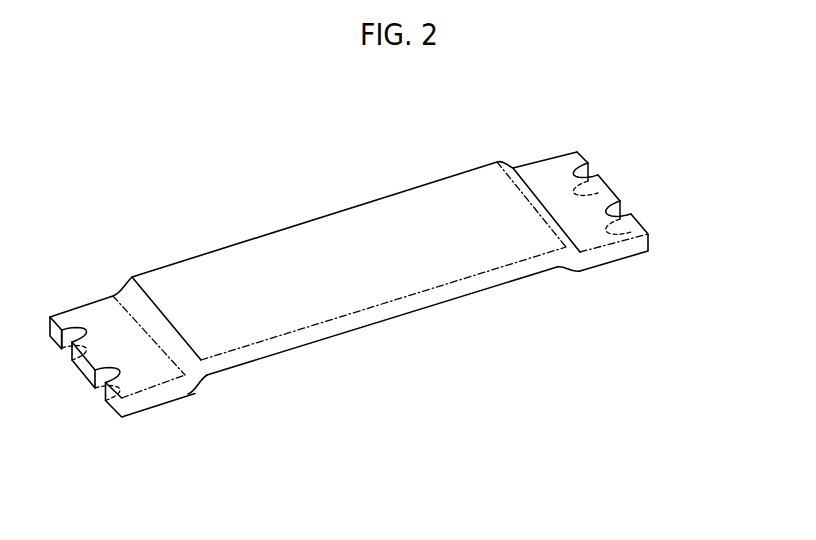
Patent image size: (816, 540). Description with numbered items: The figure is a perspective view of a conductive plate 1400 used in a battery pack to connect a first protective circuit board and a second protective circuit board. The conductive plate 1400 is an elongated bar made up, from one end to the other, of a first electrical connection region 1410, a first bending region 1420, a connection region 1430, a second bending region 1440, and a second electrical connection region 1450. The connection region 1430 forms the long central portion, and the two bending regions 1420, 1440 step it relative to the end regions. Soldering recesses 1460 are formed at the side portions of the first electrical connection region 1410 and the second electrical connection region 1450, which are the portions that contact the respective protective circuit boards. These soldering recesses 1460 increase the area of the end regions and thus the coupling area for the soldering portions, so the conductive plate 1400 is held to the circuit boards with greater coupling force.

The conductive plate 1400 is at (302, 143).
The first electrical connection region 1410 is at (145, 400).
The first bending region 1420 is at (217, 388).
The connection region 1430 is at (373, 313).
The second bending region 1440 is at (557, 271).
The second electrical connection region 1450 is at (628, 253).
The soldering recesses 1460 is at (107, 370).